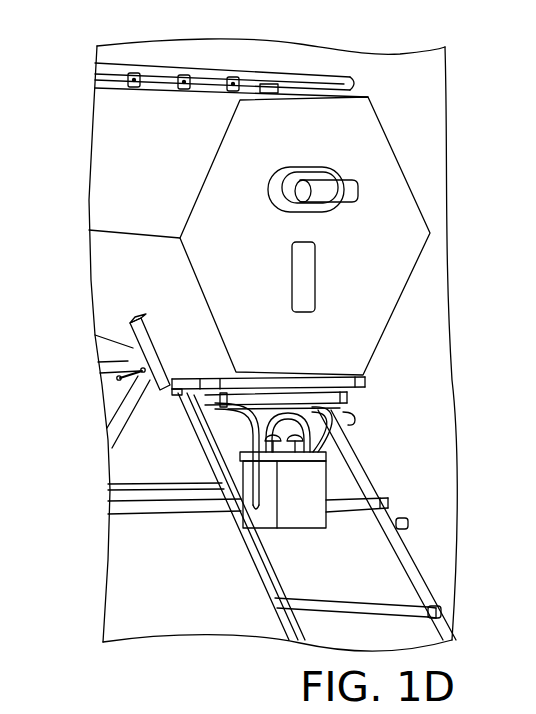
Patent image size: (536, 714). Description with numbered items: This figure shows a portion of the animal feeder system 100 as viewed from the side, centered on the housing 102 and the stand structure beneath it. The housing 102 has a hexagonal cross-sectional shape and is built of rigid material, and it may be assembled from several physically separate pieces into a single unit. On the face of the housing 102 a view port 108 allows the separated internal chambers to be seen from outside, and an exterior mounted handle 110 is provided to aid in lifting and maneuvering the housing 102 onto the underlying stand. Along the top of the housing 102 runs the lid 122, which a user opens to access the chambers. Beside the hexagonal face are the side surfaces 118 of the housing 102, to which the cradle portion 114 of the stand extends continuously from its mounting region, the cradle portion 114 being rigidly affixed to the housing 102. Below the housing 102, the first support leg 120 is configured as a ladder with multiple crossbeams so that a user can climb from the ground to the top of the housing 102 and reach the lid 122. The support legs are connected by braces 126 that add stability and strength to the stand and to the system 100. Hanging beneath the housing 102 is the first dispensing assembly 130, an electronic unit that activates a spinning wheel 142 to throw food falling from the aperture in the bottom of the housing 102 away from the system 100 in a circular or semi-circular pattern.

The animal feeder system 100 is at (374, 46).
The housing 102 is at (233, 261).
The view port 108 is at (313, 302).
The exterior mounted handle 110 is at (313, 156).
The cradle portion 114 is at (100, 381).
The side surface 118 is at (149, 181).
The first support leg 120 is at (400, 523).
The lid 122 is at (227, 71).
The braces 126 is at (165, 515).
The first dispensing assembly 130 is at (323, 534).
The spinning wheel 142 is at (298, 460).